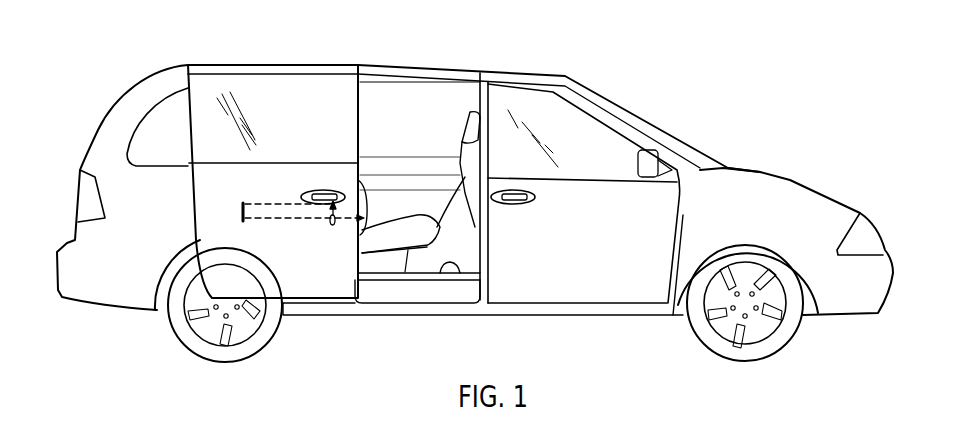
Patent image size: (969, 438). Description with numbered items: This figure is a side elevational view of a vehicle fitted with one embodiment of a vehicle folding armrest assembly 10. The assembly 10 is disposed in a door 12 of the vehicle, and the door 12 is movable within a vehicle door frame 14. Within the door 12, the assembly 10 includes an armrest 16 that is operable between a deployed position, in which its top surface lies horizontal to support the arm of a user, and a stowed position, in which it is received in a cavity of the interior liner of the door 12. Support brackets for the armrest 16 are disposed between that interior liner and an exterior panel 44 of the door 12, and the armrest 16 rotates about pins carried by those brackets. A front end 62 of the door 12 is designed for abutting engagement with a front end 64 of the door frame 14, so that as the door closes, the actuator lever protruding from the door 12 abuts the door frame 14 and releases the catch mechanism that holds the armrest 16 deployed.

The vehicle folding armrest assembly 10 is at (329, 243).
The door 12 is at (295, 95).
The vehicle door frame 14 is at (443, 265).
The armrest 16 is at (278, 195).
The exterior panel 44 is at (235, 272).
The front end of the vehicle door 62 is at (360, 183).
The front end of the vehicle door frame 64 is at (465, 112).